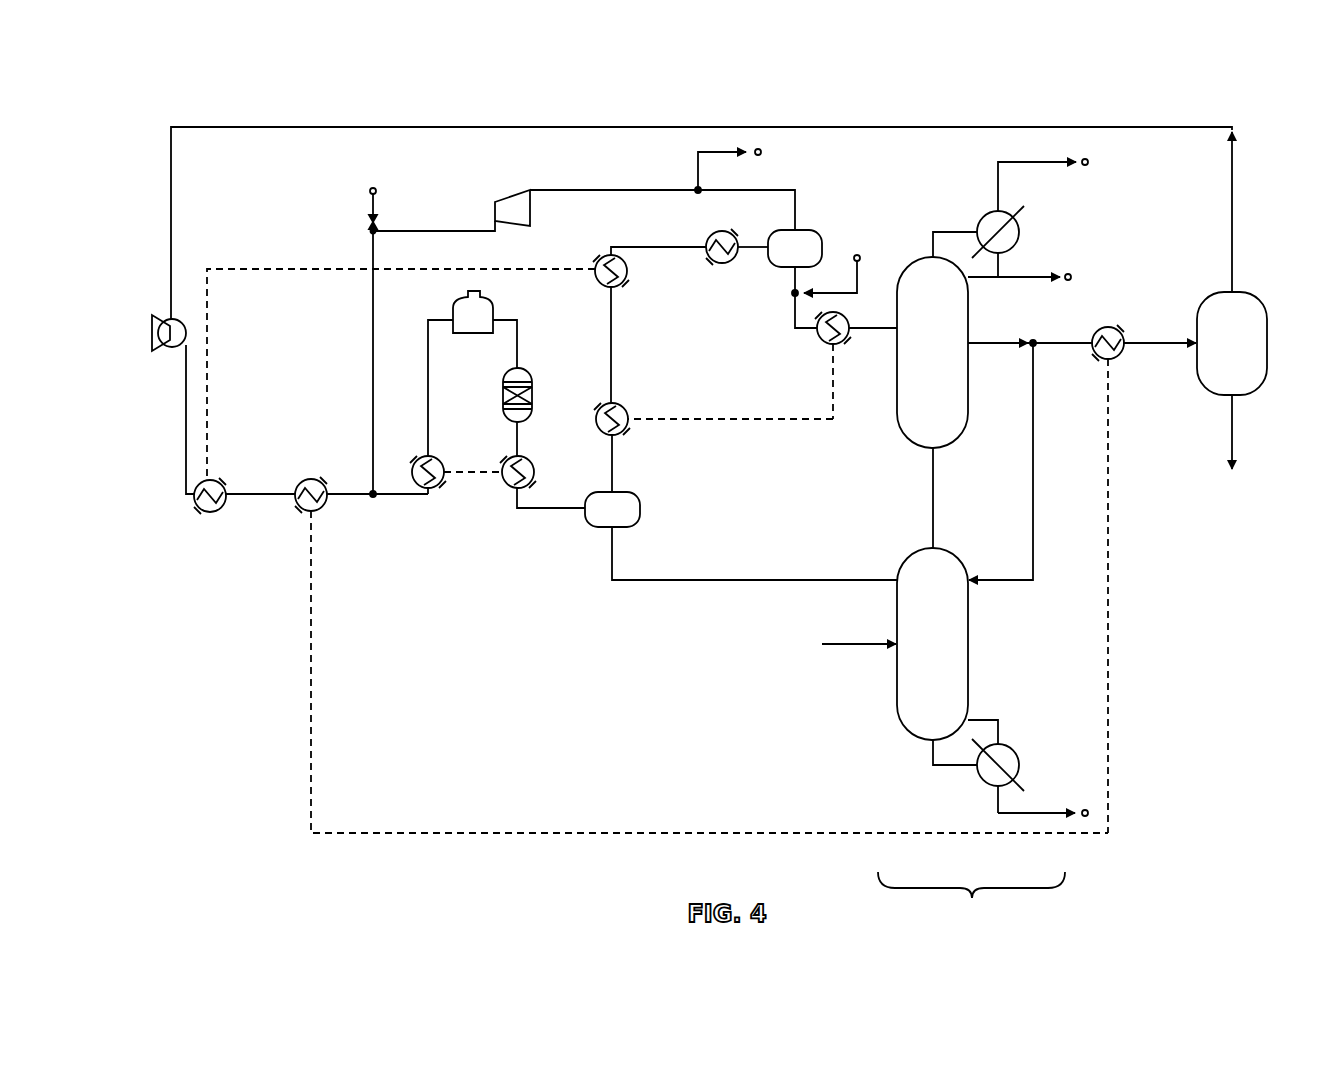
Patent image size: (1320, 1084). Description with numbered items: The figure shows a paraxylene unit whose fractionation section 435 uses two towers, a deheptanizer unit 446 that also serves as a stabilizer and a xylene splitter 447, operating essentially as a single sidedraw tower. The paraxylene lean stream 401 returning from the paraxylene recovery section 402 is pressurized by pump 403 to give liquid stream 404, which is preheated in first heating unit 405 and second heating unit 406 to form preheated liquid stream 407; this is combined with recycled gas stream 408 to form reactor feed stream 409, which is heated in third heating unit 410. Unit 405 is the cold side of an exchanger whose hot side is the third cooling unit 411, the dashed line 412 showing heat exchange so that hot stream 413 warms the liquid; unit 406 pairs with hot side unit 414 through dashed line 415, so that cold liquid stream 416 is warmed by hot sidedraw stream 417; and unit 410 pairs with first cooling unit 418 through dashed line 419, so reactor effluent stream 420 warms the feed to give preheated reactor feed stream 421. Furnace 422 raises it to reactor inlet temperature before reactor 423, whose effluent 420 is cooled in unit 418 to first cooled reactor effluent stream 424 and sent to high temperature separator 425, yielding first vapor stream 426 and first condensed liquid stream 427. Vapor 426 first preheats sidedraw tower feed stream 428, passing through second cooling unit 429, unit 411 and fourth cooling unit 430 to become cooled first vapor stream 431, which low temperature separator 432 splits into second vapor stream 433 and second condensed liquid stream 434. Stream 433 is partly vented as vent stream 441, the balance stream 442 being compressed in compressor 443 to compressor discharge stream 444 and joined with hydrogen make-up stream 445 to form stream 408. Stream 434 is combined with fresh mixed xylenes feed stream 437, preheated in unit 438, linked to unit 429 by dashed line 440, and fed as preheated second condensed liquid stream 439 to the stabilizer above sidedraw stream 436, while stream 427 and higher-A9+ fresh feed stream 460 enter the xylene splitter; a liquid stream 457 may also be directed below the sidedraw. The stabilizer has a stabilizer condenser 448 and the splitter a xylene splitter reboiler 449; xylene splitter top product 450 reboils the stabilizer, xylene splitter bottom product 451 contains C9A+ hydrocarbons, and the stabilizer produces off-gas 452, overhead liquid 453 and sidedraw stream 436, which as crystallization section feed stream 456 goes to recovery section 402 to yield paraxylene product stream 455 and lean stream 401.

The paraxylene lean stream 401 is at (1238, 205).
The paraxylene recovery section 402 is at (1250, 295).
The pump 403 is at (152, 334).
The liquid stream 404 is at (184, 420).
The first heating unit 405 is at (208, 512).
The second heating unit 406 is at (312, 478).
The preheated liquid stream 407 is at (340, 498).
The recycled gas stream 408 is at (370, 332).
The reactor feed stream 409 is at (418, 490).
The third heating unit 410 is at (445, 484).
The third cooling unit 411 is at (620, 283).
The dashed line 412 is at (270, 269).
The hot stream 413 is at (615, 380).
The hot side unit 414 is at (1122, 330).
The dashed line 415 is at (572, 836).
The cold liquid stream 416 is at (248, 494).
The hot sidedraw stream 417 is at (1097, 330).
The first cooling unit 418 is at (535, 470).
The dashed line 419 is at (470, 471).
The reactor effluent stream 420 is at (520, 440).
The preheated reactor feed stream 421 is at (428, 360).
The furnace 422 is at (483, 298).
The reactor 423 is at (528, 400).
The first cooled reactor effluent stream 424 is at (543, 512).
The high temperature separator 425 is at (643, 505).
The first vapor stream 426 is at (615, 465).
The first condensed liquid stream 427 is at (717, 585).
The sidedraw tower feed stream 428 is at (823, 340).
The second cooling unit 429 is at (625, 410).
The fourth cooling unit 430 is at (712, 262).
The cooled first vapor stream 431 is at (750, 255).
The low temperature separator 432 is at (822, 240).
The second vapor stream 433 is at (775, 190).
The second condensed liquid stream 434 is at (787, 280).
The sidedraw tower apparatus 435 is at (971, 901).
The sidedraw stream 436 is at (1005, 343).
The fresh mixed xylenes feed stream 437 is at (858, 262).
The preheating unit 438 is at (850, 322).
The preheated second condensed liquid stream 439 is at (838, 350).
The dashed line 440 is at (787, 420).
The vent stream 441 is at (727, 152).
The balance stream 442 is at (626, 190).
The compressor 443 is at (522, 198).
The compressor discharge stream 444 is at (430, 231).
The hydrogen make-up stream 445 is at (368, 205).
The deheptanizer unit 446 is at (972, 325).
The xylene splitter 447 is at (972, 640).
The stabilizer condenser 448 is at (1022, 225).
The xylene splitter reboiler 449 is at (1022, 765).
The xylene splitter top product 450 is at (936, 500).
The xylene splitter bottom product 451 is at (1040, 816).
The stabilizer off-gas vapor top product 452 is at (1043, 162).
The stabilizer overhead liquid product 453 is at (1045, 277).
The paraxylene product stream 455 is at (1236, 430).
The crystallization section feed stream 456 is at (1175, 340).
The liquid stream 457 is at (1036, 455).
The fresh feed stream 460 is at (858, 648).